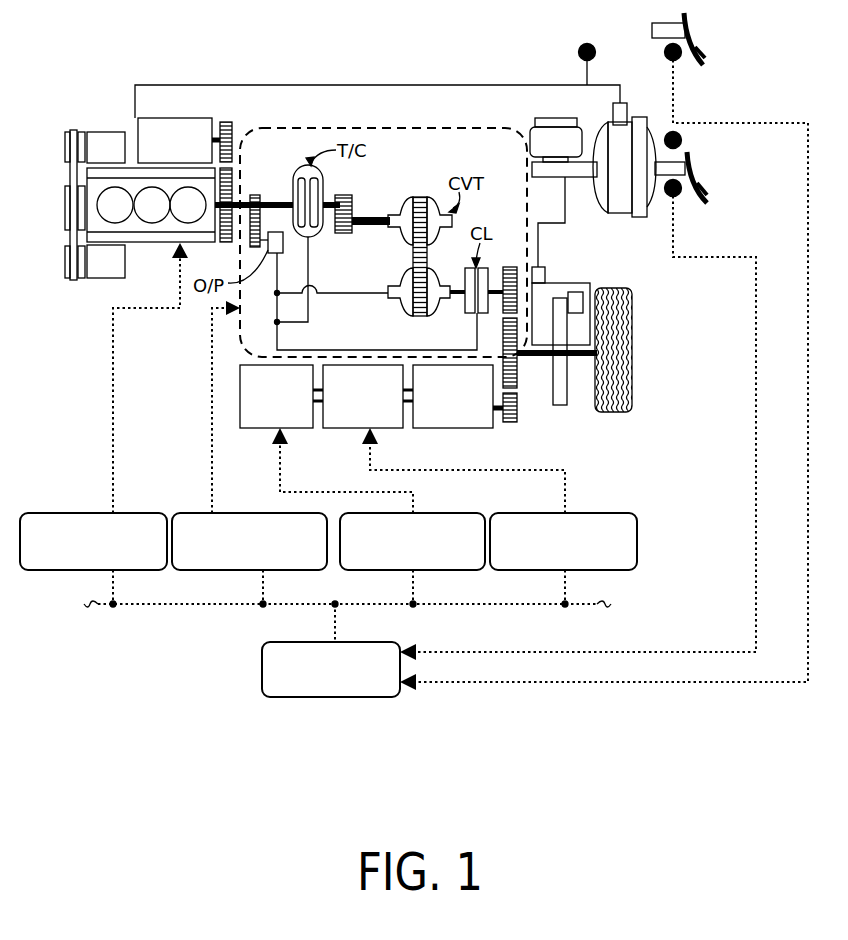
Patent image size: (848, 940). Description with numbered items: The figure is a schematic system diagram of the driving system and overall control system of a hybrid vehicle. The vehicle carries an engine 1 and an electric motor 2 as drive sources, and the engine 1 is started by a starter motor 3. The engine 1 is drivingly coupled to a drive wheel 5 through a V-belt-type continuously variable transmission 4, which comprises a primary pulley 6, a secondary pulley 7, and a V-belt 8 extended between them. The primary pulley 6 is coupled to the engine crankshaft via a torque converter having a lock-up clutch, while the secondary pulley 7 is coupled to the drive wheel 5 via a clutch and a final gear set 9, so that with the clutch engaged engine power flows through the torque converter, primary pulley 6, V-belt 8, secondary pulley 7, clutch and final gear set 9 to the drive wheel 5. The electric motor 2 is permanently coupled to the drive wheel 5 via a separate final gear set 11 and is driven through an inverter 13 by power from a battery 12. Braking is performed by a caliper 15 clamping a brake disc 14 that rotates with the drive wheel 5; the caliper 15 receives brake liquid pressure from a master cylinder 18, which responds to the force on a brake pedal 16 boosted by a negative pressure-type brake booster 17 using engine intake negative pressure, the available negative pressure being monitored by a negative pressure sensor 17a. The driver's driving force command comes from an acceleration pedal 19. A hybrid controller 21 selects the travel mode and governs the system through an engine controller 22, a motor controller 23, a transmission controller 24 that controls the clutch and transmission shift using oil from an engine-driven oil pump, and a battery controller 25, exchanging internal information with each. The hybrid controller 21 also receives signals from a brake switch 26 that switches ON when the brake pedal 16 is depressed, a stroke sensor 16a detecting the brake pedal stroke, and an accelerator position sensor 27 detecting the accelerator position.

The engine 1 is at (152, 243).
The electric motor 2 is at (470, 428).
The starter motor 3 is at (178, 118).
The V-belt-type continuously variable transmission 4 is at (455, 128).
The drive wheel 5 is at (633, 298).
The primary pulley 6 is at (402, 202).
The secondary pulley 7 is at (399, 314).
The V-belt 8 is at (412, 248).
The final gear set 9 is at (503, 343).
The final gear set 11 is at (517, 373).
The battery 12 is at (255, 428).
The inverter 13 is at (356, 428).
The brake disc 14 is at (568, 396).
The caliper 15 is at (582, 283).
The brake pedal 16 is at (708, 194).
The stroke sensor 16a is at (683, 141).
The negative pressure-type brake booster 17 is at (627, 218).
The negative pressure sensor 17a is at (579, 49).
The master cylinder 18 is at (577, 178).
The acceleration pedal 19 is at (707, 51).
The hybrid controller 21 is at (262, 662).
The engine controller 22 is at (164, 504).
The motor controller 23 is at (612, 513).
The transmission controller 24 is at (250, 513).
The battery controller 25 is at (452, 513).
The brake switch 26 is at (679, 196).
The accelerator position sensor 27 is at (679, 60).